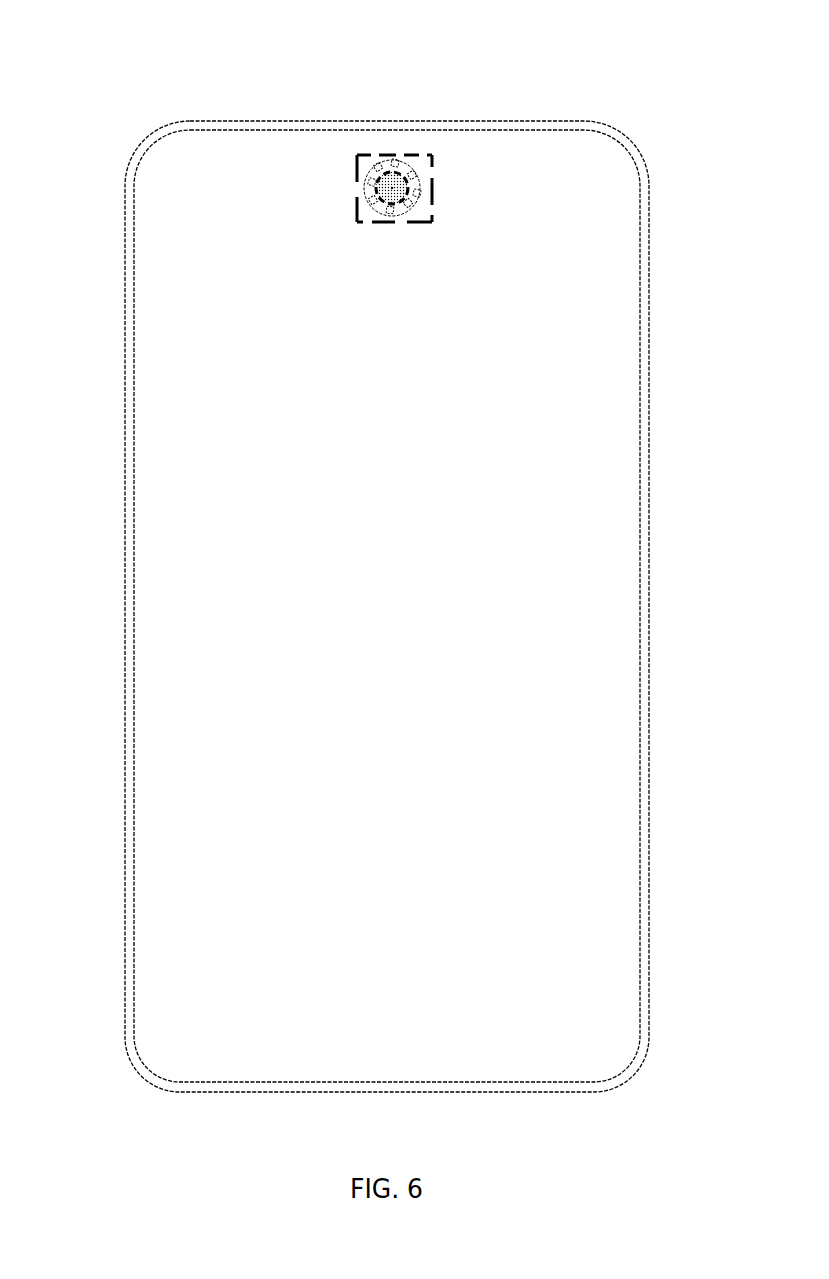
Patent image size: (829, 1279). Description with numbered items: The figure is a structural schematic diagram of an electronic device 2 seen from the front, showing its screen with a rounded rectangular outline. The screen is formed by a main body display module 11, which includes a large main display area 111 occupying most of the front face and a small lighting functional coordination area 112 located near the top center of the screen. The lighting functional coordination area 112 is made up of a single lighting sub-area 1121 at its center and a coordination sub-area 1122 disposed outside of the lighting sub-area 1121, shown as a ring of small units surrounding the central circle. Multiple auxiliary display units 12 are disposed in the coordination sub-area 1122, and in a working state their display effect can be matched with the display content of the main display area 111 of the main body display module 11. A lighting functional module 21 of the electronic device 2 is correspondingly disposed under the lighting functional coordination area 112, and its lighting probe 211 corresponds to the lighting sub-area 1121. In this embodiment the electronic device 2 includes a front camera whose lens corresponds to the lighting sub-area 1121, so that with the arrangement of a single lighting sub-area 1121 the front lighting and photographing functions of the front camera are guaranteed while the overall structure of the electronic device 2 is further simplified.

The electronic device 2 is at (156, 95).
The main body display module 11 is at (245, 131).
The main display area 111 is at (260, 237).
The lighting functional coordination area 112 is at (378, 208).
The lighting sub-area 1121 is at (390, 172).
The coordination sub-area 1122 is at (423, 183).
The auxiliary display units 12 is at (432, 222).
The lighting functional module 21 is at (392, 190).
The lighting probe 211 is at (405, 207).